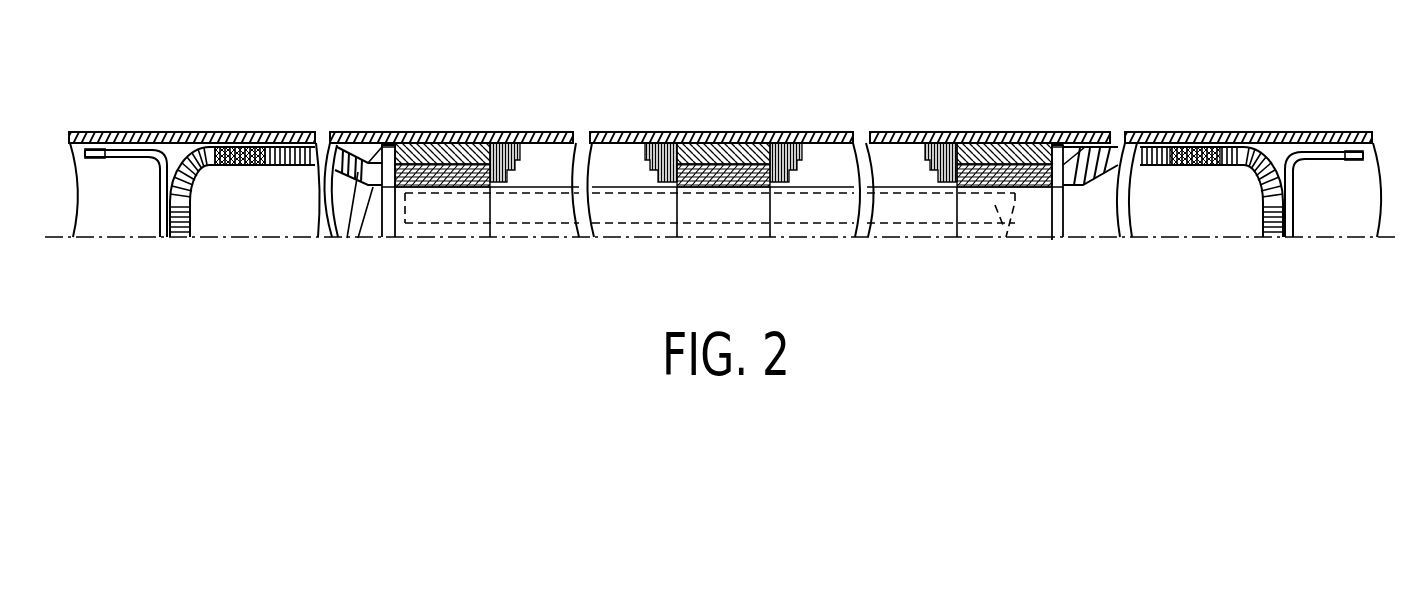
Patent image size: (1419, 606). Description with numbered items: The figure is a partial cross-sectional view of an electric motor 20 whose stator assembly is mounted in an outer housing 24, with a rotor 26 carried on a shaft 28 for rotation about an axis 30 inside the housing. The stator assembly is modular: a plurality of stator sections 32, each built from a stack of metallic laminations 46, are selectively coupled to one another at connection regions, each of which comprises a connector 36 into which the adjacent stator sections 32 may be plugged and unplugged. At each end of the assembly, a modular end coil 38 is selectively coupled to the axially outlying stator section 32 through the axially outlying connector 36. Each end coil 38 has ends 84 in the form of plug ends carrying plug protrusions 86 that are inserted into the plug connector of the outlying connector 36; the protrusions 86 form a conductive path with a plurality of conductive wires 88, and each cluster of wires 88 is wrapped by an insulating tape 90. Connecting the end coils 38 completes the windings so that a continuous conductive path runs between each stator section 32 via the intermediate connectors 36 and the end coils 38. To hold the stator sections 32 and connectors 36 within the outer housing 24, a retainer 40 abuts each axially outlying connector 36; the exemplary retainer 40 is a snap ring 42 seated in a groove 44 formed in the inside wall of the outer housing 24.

The electric motor 20 is at (873, 75).
The outer housing 24 is at (620, 132).
The rotor 26 is at (1001, 234).
The shaft 28 is at (914, 223).
The axis 30 is at (697, 238).
The stator sections 32 is at (550, 152).
The connector 36 is at (448, 132).
The end coils 38 is at (208, 133).
The retainer 40 is at (370, 225).
The snap ring 42 is at (391, 240).
The groove 44 is at (371, 134).
The metallic laminations 46 is at (505, 135).
The ends 84 is at (347, 238).
The plug protrusions 86 is at (403, 146).
The conductive wires 88 is at (257, 170).
The tape 90 is at (310, 172).